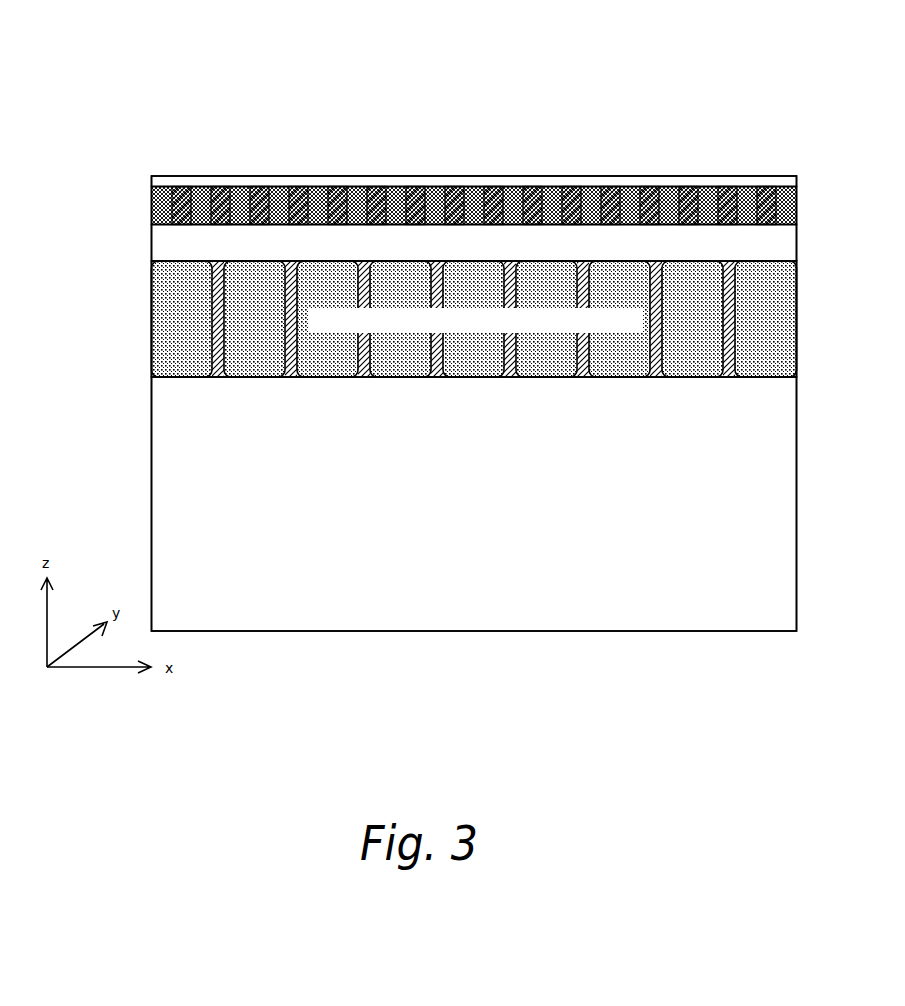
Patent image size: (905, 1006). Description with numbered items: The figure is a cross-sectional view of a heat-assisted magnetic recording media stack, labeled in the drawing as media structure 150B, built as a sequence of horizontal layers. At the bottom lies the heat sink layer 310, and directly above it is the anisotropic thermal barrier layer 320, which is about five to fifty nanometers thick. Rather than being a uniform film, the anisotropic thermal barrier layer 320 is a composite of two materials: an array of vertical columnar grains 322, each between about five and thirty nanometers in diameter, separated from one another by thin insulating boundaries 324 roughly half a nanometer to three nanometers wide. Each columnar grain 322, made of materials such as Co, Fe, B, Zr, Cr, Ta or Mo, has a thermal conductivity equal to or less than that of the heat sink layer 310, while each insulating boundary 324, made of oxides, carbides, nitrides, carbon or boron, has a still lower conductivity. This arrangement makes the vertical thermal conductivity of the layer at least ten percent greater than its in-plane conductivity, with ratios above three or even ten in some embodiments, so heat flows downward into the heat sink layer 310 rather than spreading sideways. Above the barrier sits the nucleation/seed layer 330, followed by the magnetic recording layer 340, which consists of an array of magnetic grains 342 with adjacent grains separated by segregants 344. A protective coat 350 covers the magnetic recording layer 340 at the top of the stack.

The heat-assisted magnetic recording media stack 150B is at (160, 86).
The heat sink layer 310 is at (144, 508).
The anisotropic thermal barrier layer 320 is at (428, 371).
The columnar grain 322 is at (480, 365).
The insulating boundary 324 is at (440, 373).
The nucleation/seed layer 330 is at (144, 245).
The magnetic recording layer 340 is at (428, 156).
The magnetic grain 342 is at (432, 194).
The segregant 344 is at (341, 203).
The protective coat 350 is at (144, 176).